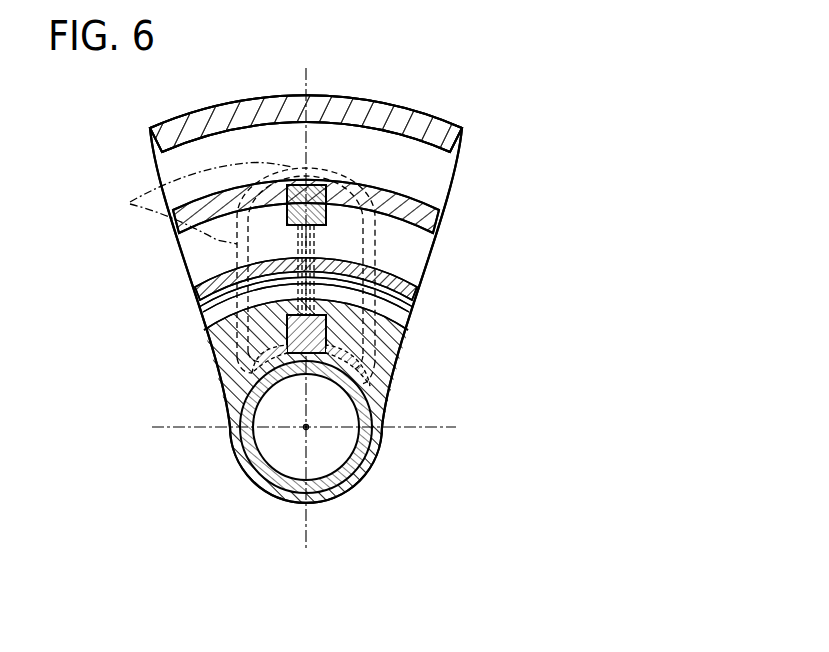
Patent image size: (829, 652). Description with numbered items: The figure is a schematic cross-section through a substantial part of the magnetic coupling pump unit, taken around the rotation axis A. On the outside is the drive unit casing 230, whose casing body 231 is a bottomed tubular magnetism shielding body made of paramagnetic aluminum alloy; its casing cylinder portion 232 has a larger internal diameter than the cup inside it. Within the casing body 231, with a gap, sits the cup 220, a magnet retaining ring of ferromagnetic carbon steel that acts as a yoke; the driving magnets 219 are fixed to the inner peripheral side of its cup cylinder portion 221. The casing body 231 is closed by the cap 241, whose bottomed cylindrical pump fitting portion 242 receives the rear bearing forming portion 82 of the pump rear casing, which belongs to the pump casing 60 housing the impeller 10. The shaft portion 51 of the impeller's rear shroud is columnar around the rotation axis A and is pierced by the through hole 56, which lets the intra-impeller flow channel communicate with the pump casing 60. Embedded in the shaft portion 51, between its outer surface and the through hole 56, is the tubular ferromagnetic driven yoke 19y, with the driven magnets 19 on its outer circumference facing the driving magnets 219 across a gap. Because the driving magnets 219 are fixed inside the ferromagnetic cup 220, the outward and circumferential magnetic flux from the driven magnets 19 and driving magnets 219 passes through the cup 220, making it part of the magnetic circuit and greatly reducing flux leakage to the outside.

The casing cylinder portion 232 is at (374, 137).
The casing body 231 is at (401, 137).
The drive unit casing 230 is at (424, 137).
The cup cylinder portion 221 is at (379, 212).
The cup 220 is at (402, 212).
The driving magnets 219 is at (322, 213).
The pump fitting portion 242 is at (387, 288).
The cap 241 is at (410, 288).
The rear bearing forming portion 82 is at (363, 315).
The pump casing 60 is at (379, 315).
The driven magnets 19 is at (373, 352).
The driven yoke 19y is at (370, 387).
The shaft portion 51 is at (282, 315).
The impeller 10 is at (292, 315).
The rotation axis A is at (306, 427).
The through hole 56 is at (270, 450).